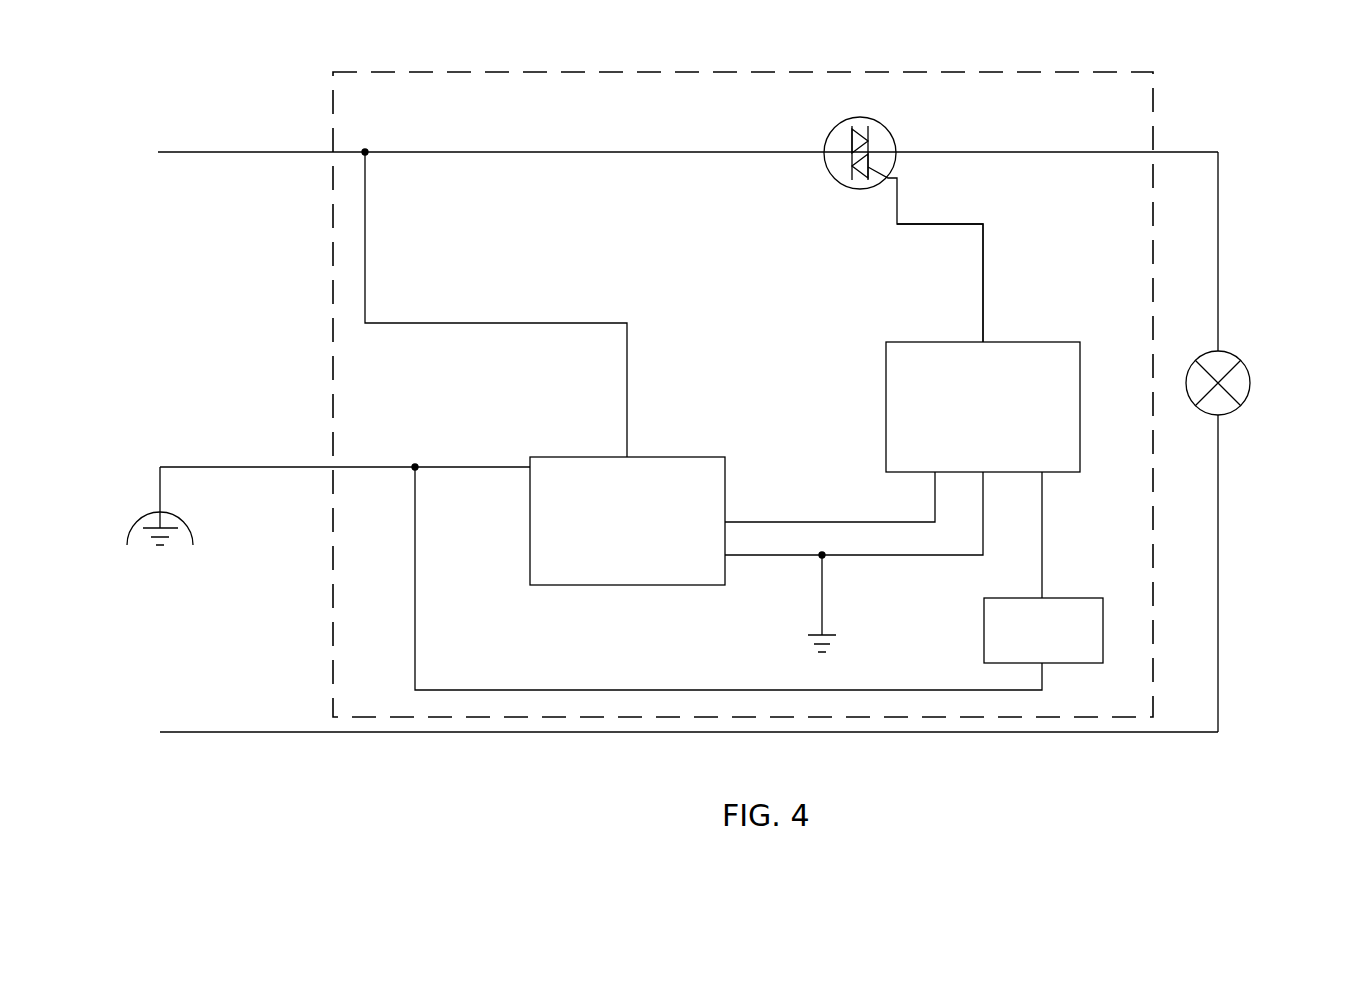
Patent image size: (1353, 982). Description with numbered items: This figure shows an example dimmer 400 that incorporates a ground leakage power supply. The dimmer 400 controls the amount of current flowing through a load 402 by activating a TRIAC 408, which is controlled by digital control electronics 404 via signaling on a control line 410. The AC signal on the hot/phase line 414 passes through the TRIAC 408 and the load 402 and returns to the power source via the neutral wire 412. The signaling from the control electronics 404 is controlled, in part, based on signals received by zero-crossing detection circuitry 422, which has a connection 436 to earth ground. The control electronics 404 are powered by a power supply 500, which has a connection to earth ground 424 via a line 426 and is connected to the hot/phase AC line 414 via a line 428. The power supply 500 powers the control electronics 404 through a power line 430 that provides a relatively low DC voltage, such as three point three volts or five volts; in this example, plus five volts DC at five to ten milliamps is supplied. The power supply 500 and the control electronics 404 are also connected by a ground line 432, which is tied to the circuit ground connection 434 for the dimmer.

The dimmer 400 is at (1168, 78).
The load 402 is at (1243, 360).
The digital control electronics 404 is at (925, 342).
The TRIAC 408 is at (829, 128).
The control line 410 is at (972, 224).
The neutral wire 412 is at (302, 734).
The hot/phase line 414 is at (200, 150).
The zero-crossing detection circuitry 422 is at (1068, 598).
The earth ground 424 is at (141, 520).
The line 426 is at (390, 467).
The line 428 is at (515, 323).
The power line 430 is at (862, 522).
The ground line 432 is at (848, 555).
The circuit ground connection 434 is at (806, 636).
The connection 436 is at (505, 690).
The power supply 500 is at (688, 457).